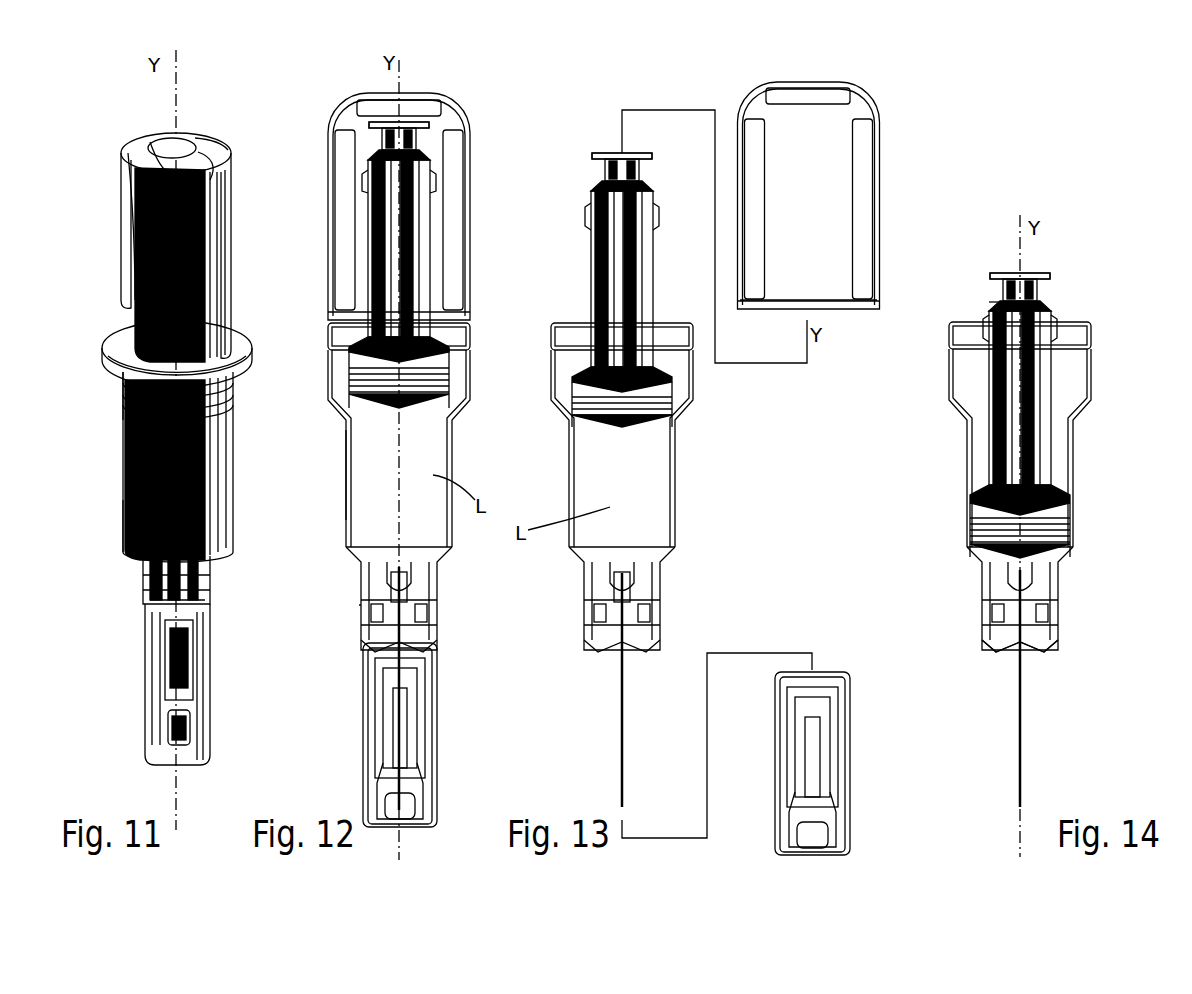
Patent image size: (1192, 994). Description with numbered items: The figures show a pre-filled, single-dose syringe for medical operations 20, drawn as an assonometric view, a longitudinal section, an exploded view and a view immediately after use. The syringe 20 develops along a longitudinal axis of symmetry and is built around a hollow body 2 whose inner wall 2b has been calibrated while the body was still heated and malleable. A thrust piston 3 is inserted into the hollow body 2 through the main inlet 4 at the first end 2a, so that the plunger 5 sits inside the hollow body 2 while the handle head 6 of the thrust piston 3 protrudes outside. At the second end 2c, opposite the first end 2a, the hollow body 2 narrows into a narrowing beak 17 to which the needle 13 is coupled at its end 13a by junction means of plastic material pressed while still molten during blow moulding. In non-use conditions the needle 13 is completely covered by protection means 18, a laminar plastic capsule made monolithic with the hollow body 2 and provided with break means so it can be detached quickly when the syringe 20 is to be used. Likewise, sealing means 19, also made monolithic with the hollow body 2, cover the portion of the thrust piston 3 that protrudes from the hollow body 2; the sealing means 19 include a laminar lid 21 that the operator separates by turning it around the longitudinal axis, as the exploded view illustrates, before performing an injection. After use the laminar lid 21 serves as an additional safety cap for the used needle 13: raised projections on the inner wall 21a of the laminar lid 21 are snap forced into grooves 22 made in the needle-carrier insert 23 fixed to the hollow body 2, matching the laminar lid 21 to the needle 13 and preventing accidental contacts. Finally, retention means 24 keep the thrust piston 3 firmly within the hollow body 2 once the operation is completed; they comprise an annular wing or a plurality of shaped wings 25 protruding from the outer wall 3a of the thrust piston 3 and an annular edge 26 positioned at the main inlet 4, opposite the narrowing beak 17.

In FIG. 11, the hollow body 2 is at (139, 488).
In FIG. 12, the hollow body 2 is at (337, 497).
In FIG. 13, the hollow body 2 is at (677, 487).
In FIG. 14, the hollow body 2 is at (965, 472).
In FIG. 11, the first end 2a is at (123, 406).
In FIG. 12, the inner wall 2b is at (337, 454).
In FIG. 11, the second end 2c is at (123, 535).
In FIG. 12, the thrust piston 3 is at (370, 217).
In FIG. 13, the thrust piston 3 is at (588, 260).
In FIG. 14, the thrust piston 3 is at (1058, 438).
In FIG. 12, the outer wall 3a is at (417, 277).
In FIG. 13, the outer wall 3a is at (633, 290).
In FIG. 14, the outer wall 3a is at (1012, 417).
In FIG. 14, the main inlet 4 is at (983, 307).
In FIG. 12, the plunger 5 is at (349, 360).
In FIG. 14, the plunger 5 is at (983, 528).
In FIG. 12, the handle head 6 is at (377, 123).
In FIG. 13, the handle head 6 is at (603, 155).
In FIG. 14, the handle head 6 is at (1010, 272).
In FIG. 12, the needle 13 is at (385, 652).
In FIG. 13, the needle 13 is at (622, 740).
In FIG. 14, the needle 13 is at (1025, 670).
In FIG. 12, the end 13a is at (407, 603).
In FIG. 13, the end 13a is at (612, 592).
In FIG. 11, the narrowing beak 17 is at (217, 548).
In FIG. 12, the narrowing beak 17 is at (349, 559).
In FIG. 13, the narrowing beak 17 is at (675, 555).
In FIG. 14, the narrowing beak 17 is at (1073, 567).
In FIG. 11, the protection means 18 is at (217, 689).
In FIG. 12, the protection means 18 is at (440, 773).
In FIG. 13, the protection means 18 is at (873, 807).
In FIG. 11, the sealing means 19 is at (120, 248).
In FIG. 12, the sealing means 19 is at (324, 258).
In FIG. 13, the sealing means 19 is at (887, 110).
In FIG. 11, the syringe for medical operations 20 is at (100, 140).
In FIG. 12, the syringe for medical operations 20 is at (473, 117).
In FIG. 13, the syringe for medical operations 20 is at (750, 528).
In FIG. 14, the syringe for medical operations 20 is at (1073, 242).
In FIG. 11, the laminar lid 21 is at (197, 222).
In FIG. 12, the laminar lid 21 is at (457, 233).
In FIG. 13, the laminar lid 21 is at (820, 218).
In FIG. 13, the inner wall 21a is at (748, 257).
In FIG. 14, the grooves 22 is at (988, 607).
In FIG. 14, the needle-carrier insert 23 is at (988, 632).
In FIG. 12, the retention means 24 is at (440, 185).
In FIG. 13, the shaped wings 25 is at (588, 213).
In FIG. 14, the shaped wings 25 is at (988, 320).
In FIG. 13, the annular edge 26 is at (588, 320).
In FIG. 14, the annular edge 26 is at (1053, 320).